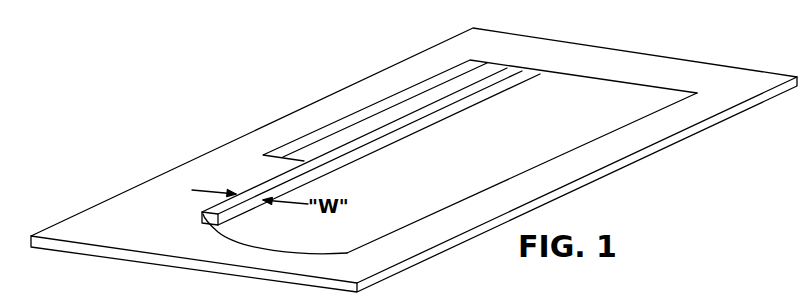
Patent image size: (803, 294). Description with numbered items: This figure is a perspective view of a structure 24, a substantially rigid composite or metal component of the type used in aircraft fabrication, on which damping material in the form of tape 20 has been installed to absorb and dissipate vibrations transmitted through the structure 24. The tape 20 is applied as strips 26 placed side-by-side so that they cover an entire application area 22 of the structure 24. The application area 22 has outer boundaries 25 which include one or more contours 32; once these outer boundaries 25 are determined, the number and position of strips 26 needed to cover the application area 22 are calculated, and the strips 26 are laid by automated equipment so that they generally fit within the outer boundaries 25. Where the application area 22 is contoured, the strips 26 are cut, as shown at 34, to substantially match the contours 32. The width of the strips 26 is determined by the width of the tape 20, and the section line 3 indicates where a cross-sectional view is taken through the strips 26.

The tape 20 is at (288, 153).
The application area 22 is at (613, 86).
The structure 24 is at (228, 163).
The outer boundaries 25 is at (605, 137).
The strips 26 is at (353, 153).
The contours 32 is at (228, 240).
The cut 34 is at (200, 227).
The section line 3- 3 is at (393, 75).